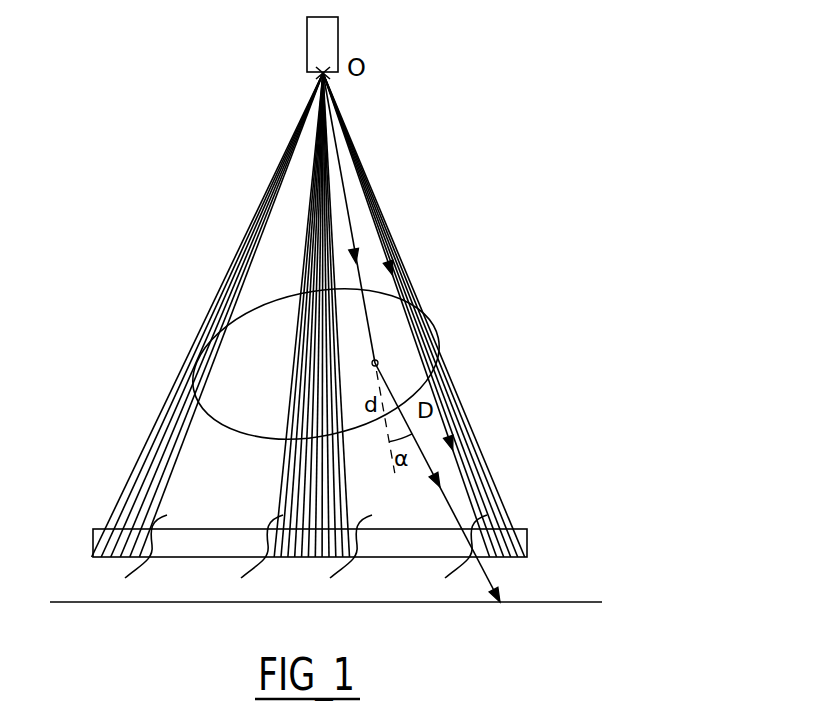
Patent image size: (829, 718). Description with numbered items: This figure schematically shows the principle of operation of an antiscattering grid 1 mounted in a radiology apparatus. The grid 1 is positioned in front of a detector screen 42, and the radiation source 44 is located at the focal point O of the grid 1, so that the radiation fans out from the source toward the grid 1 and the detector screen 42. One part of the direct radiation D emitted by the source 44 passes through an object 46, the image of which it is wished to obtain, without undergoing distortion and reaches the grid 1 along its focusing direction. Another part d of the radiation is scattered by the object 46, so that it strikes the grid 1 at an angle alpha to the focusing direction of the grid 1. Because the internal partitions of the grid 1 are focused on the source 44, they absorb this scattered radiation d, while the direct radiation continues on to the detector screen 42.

The radiation source 44 is at (321, 47).
The object 46 is at (420, 338).
The antiscattering grid 1 is at (527, 546).
The detector screen 42 is at (578, 603).